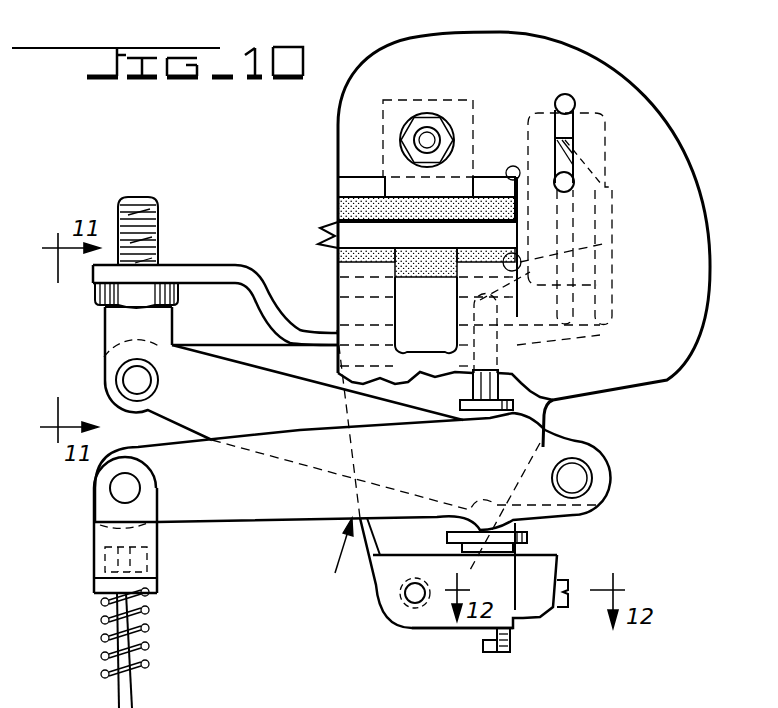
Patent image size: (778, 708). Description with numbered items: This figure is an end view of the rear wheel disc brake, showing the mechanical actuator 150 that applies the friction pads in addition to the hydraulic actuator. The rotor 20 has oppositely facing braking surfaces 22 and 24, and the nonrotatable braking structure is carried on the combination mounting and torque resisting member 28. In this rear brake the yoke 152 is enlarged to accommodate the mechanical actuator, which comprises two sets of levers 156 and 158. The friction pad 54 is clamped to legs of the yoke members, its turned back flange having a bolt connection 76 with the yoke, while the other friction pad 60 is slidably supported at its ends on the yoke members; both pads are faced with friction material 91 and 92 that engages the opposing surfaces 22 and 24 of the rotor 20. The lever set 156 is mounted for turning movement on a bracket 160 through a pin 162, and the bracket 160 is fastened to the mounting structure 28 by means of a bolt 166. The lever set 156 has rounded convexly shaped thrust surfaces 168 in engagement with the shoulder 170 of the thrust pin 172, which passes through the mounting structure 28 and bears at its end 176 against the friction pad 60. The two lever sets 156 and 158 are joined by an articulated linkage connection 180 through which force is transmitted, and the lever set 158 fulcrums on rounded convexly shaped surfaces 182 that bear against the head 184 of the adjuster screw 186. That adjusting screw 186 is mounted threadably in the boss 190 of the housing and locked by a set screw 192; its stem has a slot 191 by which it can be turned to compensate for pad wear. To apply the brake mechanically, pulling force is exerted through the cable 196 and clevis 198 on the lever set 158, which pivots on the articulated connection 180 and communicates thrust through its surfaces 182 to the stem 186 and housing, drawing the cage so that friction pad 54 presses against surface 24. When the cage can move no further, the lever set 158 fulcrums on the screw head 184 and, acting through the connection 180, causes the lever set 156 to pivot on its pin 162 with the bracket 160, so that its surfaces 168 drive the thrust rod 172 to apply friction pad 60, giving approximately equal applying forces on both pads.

The rotor 20 is at (347, 240).
The braking surface 22 is at (360, 283).
The braking surface 24 is at (360, 283).
The mounting and torque resisting member 28 is at (192, 273).
The friction pad 54 is at (337, 210).
The friction pad 60 is at (337, 257).
The bolt connection 76 is at (423, 127).
The friction material 91 is at (428, 264).
The friction material 92 is at (478, 208).
The mechanical actuator 150 is at (330, 565).
The yoke 152 is at (660, 122).
The lever set 156 is at (225, 373).
The lever set 158 is at (262, 522).
The bracket 160 is at (125, 322).
The pin 162 is at (133, 380).
The bolt 166 is at (135, 247).
The thrust surfaces 168 is at (553, 421).
The shoulder 170 is at (500, 405).
The thrust pin 172 is at (522, 383).
The end of thrust pin 176 is at (610, 243).
The articulated linkage connection 180 is at (578, 480).
The convexly shaped surfaces 182 is at (598, 507).
The head 184 is at (525, 537).
The adjuster screw 186 is at (511, 643).
The boss 190 is at (495, 630).
The slot 191 is at (487, 653).
The set screw 192 is at (567, 597).
The cable 196 is at (133, 690).
The clevis 198 is at (142, 538).